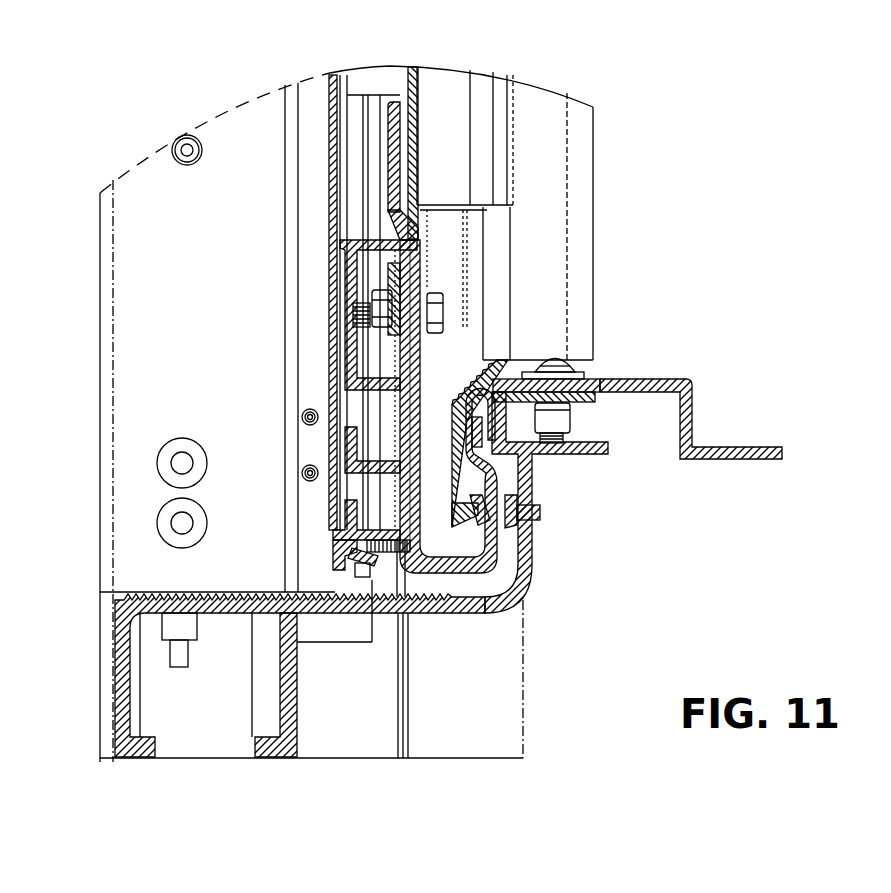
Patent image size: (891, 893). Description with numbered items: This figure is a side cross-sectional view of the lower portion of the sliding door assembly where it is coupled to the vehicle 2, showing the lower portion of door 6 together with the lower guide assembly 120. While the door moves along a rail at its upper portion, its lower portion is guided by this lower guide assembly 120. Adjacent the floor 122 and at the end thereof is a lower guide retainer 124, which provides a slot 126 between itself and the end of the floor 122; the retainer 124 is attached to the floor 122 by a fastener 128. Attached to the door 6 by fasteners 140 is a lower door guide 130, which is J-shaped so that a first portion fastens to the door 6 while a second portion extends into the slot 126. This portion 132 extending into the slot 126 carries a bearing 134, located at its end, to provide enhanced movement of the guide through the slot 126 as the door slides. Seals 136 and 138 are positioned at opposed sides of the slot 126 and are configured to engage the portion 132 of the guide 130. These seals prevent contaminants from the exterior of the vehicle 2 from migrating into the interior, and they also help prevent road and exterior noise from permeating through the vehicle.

The vehicle 2 is at (655, 72).
The door 6 is at (321, 316).
The lower guide assembly 120 is at (621, 601).
The floor 122 is at (647, 378).
The lower guide retainer 124 is at (481, 394).
The slot 126 is at (509, 360).
The fastener 128 is at (555, 354).
The lower door guide 130 is at (423, 360).
The portion 132 is at (505, 471).
The bearing 134 is at (465, 415).
The seal 136 is at (480, 531).
The seal 138 is at (509, 539).
The fasteners 140 is at (432, 296).